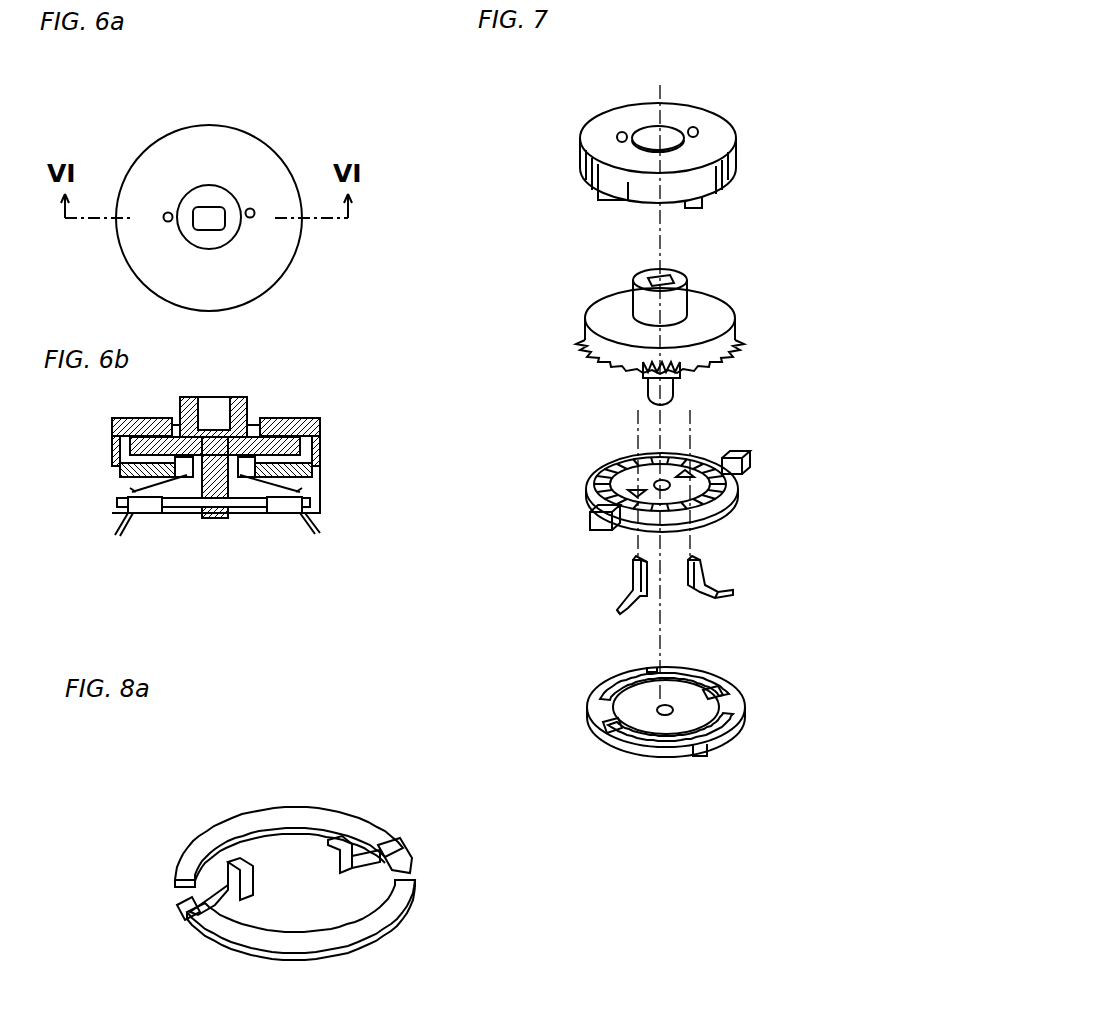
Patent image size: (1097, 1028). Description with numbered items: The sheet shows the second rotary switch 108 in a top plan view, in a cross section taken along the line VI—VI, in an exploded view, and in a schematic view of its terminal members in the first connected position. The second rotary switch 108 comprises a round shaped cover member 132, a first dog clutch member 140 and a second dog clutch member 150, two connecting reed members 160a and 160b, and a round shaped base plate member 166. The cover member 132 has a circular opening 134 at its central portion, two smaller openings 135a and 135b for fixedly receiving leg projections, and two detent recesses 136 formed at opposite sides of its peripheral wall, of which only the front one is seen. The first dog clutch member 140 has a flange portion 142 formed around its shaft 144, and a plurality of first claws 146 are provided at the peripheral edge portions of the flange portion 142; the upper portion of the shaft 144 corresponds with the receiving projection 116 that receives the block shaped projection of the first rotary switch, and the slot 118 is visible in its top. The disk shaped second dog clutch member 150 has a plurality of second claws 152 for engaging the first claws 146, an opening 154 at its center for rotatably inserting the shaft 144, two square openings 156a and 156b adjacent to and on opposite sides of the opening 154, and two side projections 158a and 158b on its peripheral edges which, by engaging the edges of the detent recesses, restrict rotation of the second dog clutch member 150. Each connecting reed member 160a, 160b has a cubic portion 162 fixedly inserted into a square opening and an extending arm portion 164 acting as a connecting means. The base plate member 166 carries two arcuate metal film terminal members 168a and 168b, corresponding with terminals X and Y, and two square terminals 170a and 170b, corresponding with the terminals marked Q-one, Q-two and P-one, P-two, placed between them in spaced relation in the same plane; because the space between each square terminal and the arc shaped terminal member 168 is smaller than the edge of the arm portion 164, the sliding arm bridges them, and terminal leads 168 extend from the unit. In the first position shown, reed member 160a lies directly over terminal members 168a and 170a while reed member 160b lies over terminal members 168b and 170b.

In FIG. 6a, the second rotary switch 108 is at (208, 120).
In FIG. 6b, the second rotary switch 108 is at (264, 400).
In FIG. 6a, the receiving projection 116 is at (213, 250).
In FIG. 6b, the receiving projection 116 is at (182, 400).
In FIG. 7, the receiving projection 116 is at (643, 302).
In FIG. 6a, the slot 118 is at (215, 212).
In FIG. 6b, the slot 118 is at (212, 412).
In FIG. 7, the slot 118 is at (650, 278).
In FIG. 6b, the round shaped cover member 132 is at (302, 418).
In FIG. 7, the round shaped cover member 132 is at (742, 130).
In FIG. 7, the circular opening 134 is at (663, 130).
In FIG. 6a, the smaller opening 135a is at (168, 222).
In FIG. 7, the smaller opening 135a is at (622, 132).
In FIG. 6a, the smaller opening 135b is at (250, 218).
In FIG. 7, the smaller opening 135b is at (694, 127).
In FIG. 6b, the detent recess 136 is at (115, 492).
In FIG. 7, the detent recess 136 is at (597, 187).
In FIG. 6b, the first dog clutch member 140 is at (300, 438).
In FIG. 7, the first dog clutch member 140 is at (712, 280).
In FIG. 7, the flange portion 142 is at (713, 312).
In FIG. 7, the shaft 144 is at (648, 373).
In FIG. 7, the first claws 146 is at (720, 362).
In FIG. 6b, the second dog clutch member 150 is at (297, 473).
In FIG. 7, the second dog clutch member 150 is at (738, 450).
In FIG. 7, the second claws 152 is at (723, 495).
In FIG. 7, the opening 154 is at (664, 480).
In FIG. 7, the square opening 156a is at (633, 492).
In FIG. 7, the square opening 156b is at (694, 480).
In FIG. 7, the side projection 158a is at (595, 508).
In FIG. 7, the side projection 158b is at (733, 453).
In FIG. 6b, the connecting reed member 160a is at (187, 478).
In FIG. 7, the connecting reed member 160a is at (628, 593).
In FIG. 8a, the connecting reed member 160a is at (227, 890).
In FIG. 6b, the connecting reed member 160b is at (247, 478).
In FIG. 7, the connecting reed member 160b is at (713, 583).
In FIG. 8a, the connecting reed member 160b is at (360, 858).
In FIG. 7, the cubic portion 162 is at (632, 563).
In FIG. 7, the extending arm portion 164 is at (630, 605).
In FIG. 7, the round shaped base plate member 166 is at (752, 717).
In FIG. 6b, the arc shaped terminal member 168 is at (133, 517).
In FIG. 7, the arcuate metal film terminal member 168a is at (652, 740).
In FIG. 8a, the arcuate metal film terminal member 168a is at (325, 948).
In FIG. 7, the arcuate metal film terminal member 168b is at (703, 660).
In FIG. 8a, the arcuate metal film terminal member 168b is at (300, 818).
In FIG. 7, the square terminal 170a is at (605, 727).
In FIG. 8a, the square terminal 170a is at (188, 910).
In FIG. 7, the square terminal 170b is at (723, 688).
In FIG. 8a, the square terminal 170b is at (410, 860).